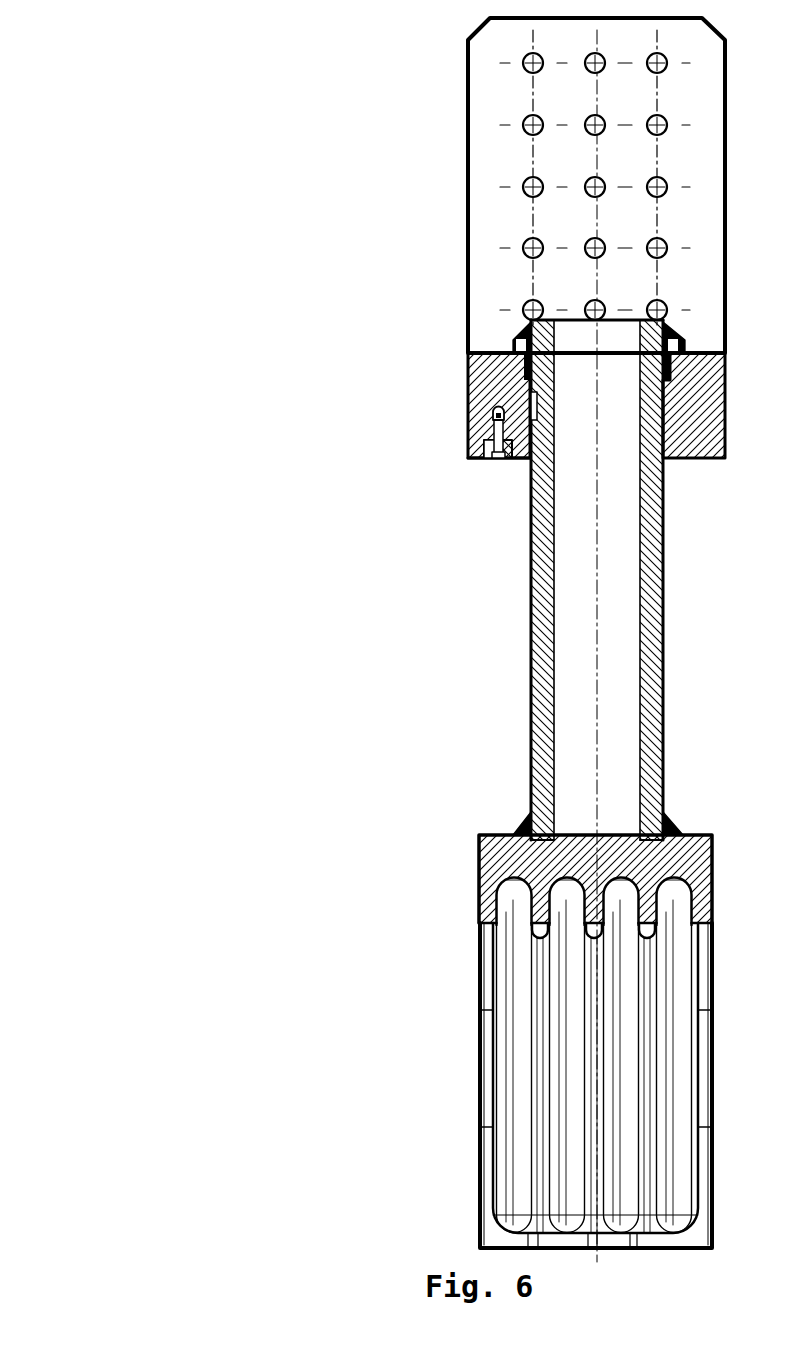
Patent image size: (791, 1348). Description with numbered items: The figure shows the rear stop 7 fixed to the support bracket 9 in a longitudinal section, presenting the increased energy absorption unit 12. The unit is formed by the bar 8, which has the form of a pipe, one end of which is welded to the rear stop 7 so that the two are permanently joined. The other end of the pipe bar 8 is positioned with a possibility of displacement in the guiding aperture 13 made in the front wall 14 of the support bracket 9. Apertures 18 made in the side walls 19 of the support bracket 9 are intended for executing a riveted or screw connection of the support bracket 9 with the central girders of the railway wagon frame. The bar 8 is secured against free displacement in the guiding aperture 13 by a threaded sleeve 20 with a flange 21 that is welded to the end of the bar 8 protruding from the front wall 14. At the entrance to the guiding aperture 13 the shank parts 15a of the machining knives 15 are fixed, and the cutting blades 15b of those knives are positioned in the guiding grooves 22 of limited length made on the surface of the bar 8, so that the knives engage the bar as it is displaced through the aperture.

The support bracket 9 is at (445, 95).
The side walls 19 is at (482, 193).
The apertures 18 is at (590, 250).
The flange 21 is at (517, 340).
The threaded sleeve 20 is at (512, 353).
The guiding grooves 22 is at (532, 390).
The shank parts 15a is at (467, 440).
The machining knives 15 is at (490, 467).
The cutting blades 15b is at (515, 462).
The increased energy absorption unit 12 is at (502, 513).
The guiding aperture 13 is at (643, 457).
The front wall 14 is at (702, 446).
The bar 8 is at (542, 715).
The rear stop 7 is at (520, 867).